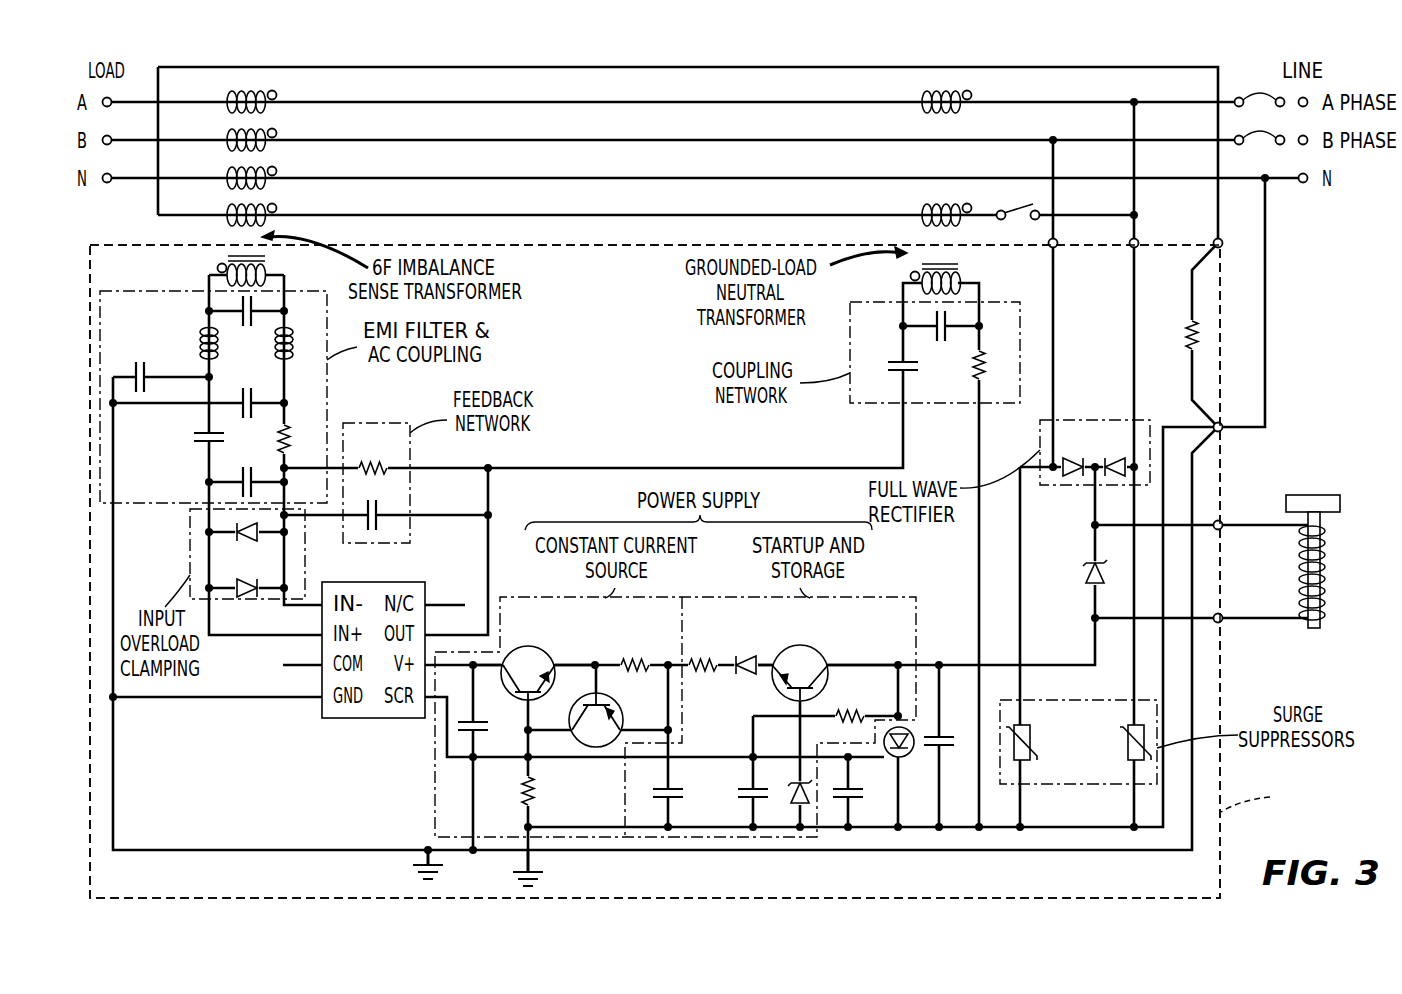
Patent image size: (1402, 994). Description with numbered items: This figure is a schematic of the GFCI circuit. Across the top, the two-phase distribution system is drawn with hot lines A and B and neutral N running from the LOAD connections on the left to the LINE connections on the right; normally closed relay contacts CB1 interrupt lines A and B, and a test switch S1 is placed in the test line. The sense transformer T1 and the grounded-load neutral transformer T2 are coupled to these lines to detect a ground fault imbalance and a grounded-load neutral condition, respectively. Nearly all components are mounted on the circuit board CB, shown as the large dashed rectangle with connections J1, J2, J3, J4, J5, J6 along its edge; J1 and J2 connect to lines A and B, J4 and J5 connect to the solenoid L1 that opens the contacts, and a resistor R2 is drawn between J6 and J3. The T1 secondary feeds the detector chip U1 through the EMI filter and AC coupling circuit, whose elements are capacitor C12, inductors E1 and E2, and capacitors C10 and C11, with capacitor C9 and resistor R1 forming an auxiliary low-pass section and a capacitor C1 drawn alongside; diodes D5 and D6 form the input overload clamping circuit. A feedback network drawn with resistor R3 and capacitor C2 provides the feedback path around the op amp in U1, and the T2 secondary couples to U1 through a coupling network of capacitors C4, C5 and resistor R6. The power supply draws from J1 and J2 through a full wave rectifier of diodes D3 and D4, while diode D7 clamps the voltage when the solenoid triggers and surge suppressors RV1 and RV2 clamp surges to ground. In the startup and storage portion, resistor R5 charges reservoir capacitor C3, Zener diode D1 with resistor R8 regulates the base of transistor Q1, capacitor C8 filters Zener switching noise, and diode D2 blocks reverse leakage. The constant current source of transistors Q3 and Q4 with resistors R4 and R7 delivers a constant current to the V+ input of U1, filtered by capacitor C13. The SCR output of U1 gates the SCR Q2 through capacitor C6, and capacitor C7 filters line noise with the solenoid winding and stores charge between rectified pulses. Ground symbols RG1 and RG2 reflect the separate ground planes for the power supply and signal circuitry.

The relay contacts CB1 is at (1260, 108).
The test switch S1 is at (1009, 200).
The connection J1 is at (1146, 257).
The connection J2 is at (1065, 257).
The connection J3 is at (1232, 437).
The connection J4 is at (1232, 515).
The connection J5 is at (1232, 608).
The connection J6 is at (1233, 243).
The resistor R2 is at (1178, 335).
The solenoid L1 is at (1313, 549).
The sense transformer T1 is at (258, 268).
The grounded neutral transformer T2 is at (952, 276).
The capacitor C12 is at (247, 325).
The inductor E1 is at (196, 344).
The inductor E2 is at (298, 344).
The capacitor C10 is at (139, 364).
The capacitor C11 is at (247, 419).
The capacitor C1 is at (194, 438).
The resistor R1 is at (298, 439).
The capacitor C9 is at (261, 476).
The feedback resistor R3 is at (373, 455).
The feedback capacitor C2 is at (387, 510).
The diode D5 is at (259, 541).
The diode D6 is at (247, 576).
The ground fault circuit interrupter integrated circuit chip U1 is at (373, 635).
The filter capacitor C13 is at (484, 712).
The transistor Q3 is at (534, 660).
The transistor Q4 is at (613, 720).
The resistor R7 is at (544, 791).
The resistor R4 is at (635, 651).
The resistor R5 is at (703, 651).
The diode D2 is at (746, 653).
The capacitor C3 is at (668, 781).
The transistor Q1 is at (828, 659).
The resistor R8 is at (850, 704).
The filter capacitor C8 is at (753, 781).
The Zener diode D1 is at (800, 780).
The capacitor C6 is at (845, 778).
The SCR Q2 is at (909, 754).
The capacitor C7 is at (945, 725).
The capacitor C5 is at (928, 330).
The capacitor C4 is at (891, 365).
The resistor R6 is at (997, 365).
The diode D3 is at (1073, 455).
The diode D4 is at (1115, 455).
The diode D7 is at (1082, 572).
The surge suppressor RV1 is at (1037, 741).
The surge suppressor RV2 is at (1120, 745).
The reference ground RG1 is at (510, 868).
The reference ground RG2 is at (407, 868).
The circuit board CB is at (1221, 812).